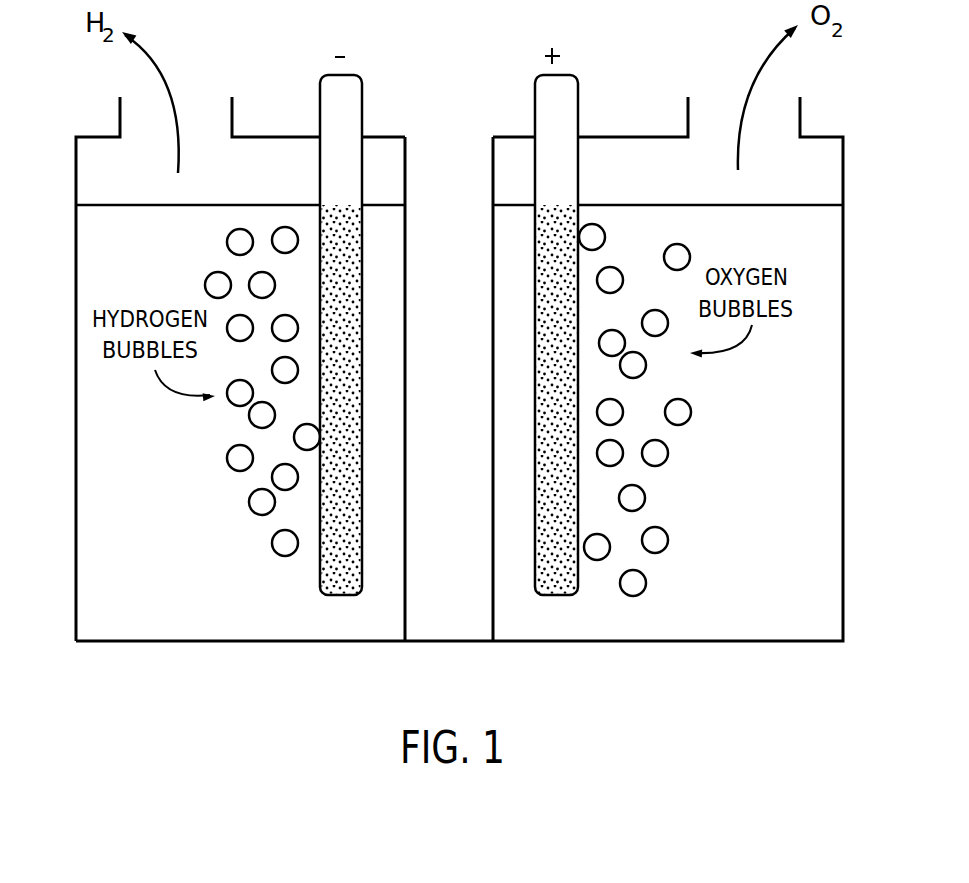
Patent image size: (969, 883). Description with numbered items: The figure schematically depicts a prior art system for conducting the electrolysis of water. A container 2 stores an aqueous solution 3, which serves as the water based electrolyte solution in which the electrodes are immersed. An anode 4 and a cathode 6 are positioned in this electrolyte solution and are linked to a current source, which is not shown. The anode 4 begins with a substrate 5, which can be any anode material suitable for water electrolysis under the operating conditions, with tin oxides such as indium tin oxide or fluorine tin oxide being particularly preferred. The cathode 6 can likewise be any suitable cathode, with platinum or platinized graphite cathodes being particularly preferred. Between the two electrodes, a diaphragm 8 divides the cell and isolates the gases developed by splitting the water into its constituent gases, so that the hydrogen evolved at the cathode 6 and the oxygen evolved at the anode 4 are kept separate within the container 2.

The container 2 is at (844, 395).
The aqueous solution 3 is at (88, 548).
The anode 4 is at (532, 593).
The substrate 5 is at (340, 203).
The cathode 6 is at (363, 376).
The diaphragm 8 is at (445, 620).